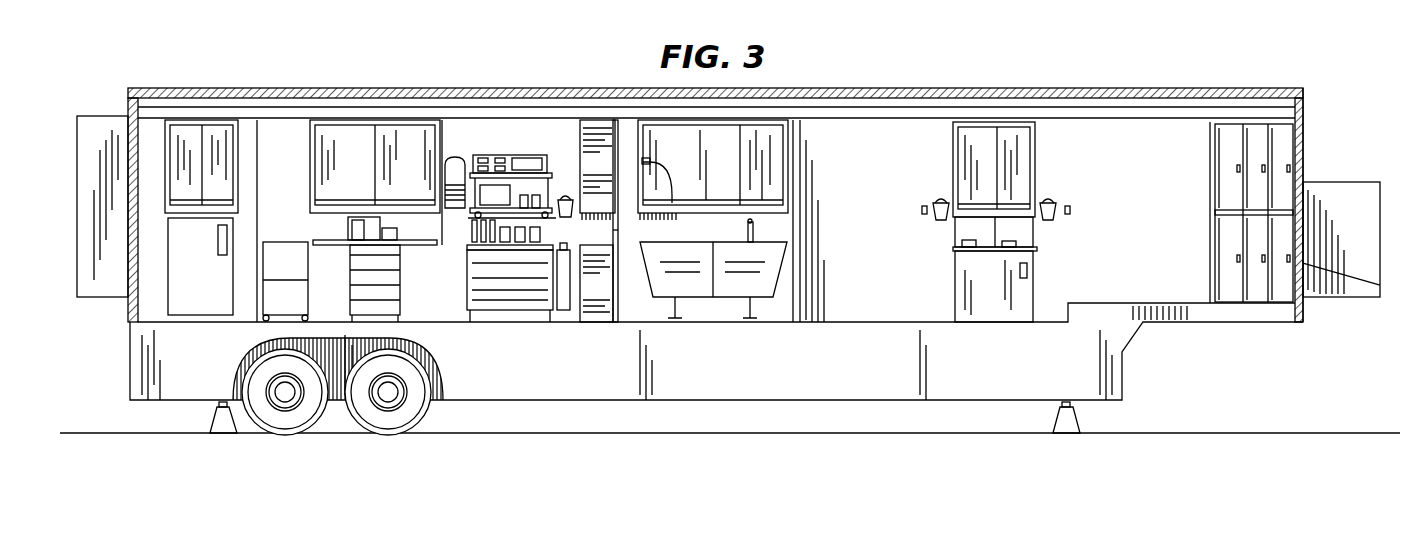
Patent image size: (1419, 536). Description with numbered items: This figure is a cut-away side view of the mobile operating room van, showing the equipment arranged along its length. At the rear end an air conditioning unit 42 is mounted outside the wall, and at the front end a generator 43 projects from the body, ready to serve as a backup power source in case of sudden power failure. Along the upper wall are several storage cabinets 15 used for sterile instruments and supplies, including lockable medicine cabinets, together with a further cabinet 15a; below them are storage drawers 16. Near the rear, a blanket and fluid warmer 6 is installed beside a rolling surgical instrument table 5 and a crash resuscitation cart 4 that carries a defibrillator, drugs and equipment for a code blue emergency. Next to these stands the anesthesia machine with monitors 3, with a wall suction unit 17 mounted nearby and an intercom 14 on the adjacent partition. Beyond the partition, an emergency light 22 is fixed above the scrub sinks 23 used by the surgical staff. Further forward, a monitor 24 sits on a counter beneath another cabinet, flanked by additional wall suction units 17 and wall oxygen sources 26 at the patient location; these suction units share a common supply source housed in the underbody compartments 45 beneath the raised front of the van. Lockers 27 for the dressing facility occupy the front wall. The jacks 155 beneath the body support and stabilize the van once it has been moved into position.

The anesthesia machine with monitors 3 is at (496, 200).
The crash resuscitation cart 4 is at (400, 280).
The rolling surgical instrument table 5 is at (293, 240).
The blanket and fluid warmer 6 is at (212, 285).
The intercom 14 is at (608, 233).
The storage cabinets 15 is at (215, 125).
The window 15a is at (1028, 172).
The storage drawers 16 is at (603, 295).
The wall suction 17 is at (566, 198).
The emergency light 22 is at (668, 202).
The scrub sinks 23 is at (740, 278).
The monitor 24 is at (1003, 232).
The wall oxygen source 26 is at (920, 210).
The lockers 27 is at (1258, 158).
The air conditioning unit 42 is at (108, 120).
The generator 43 is at (1340, 215).
The underbody compartments 45 is at (1085, 355).
The jacks 155 is at (210, 412).